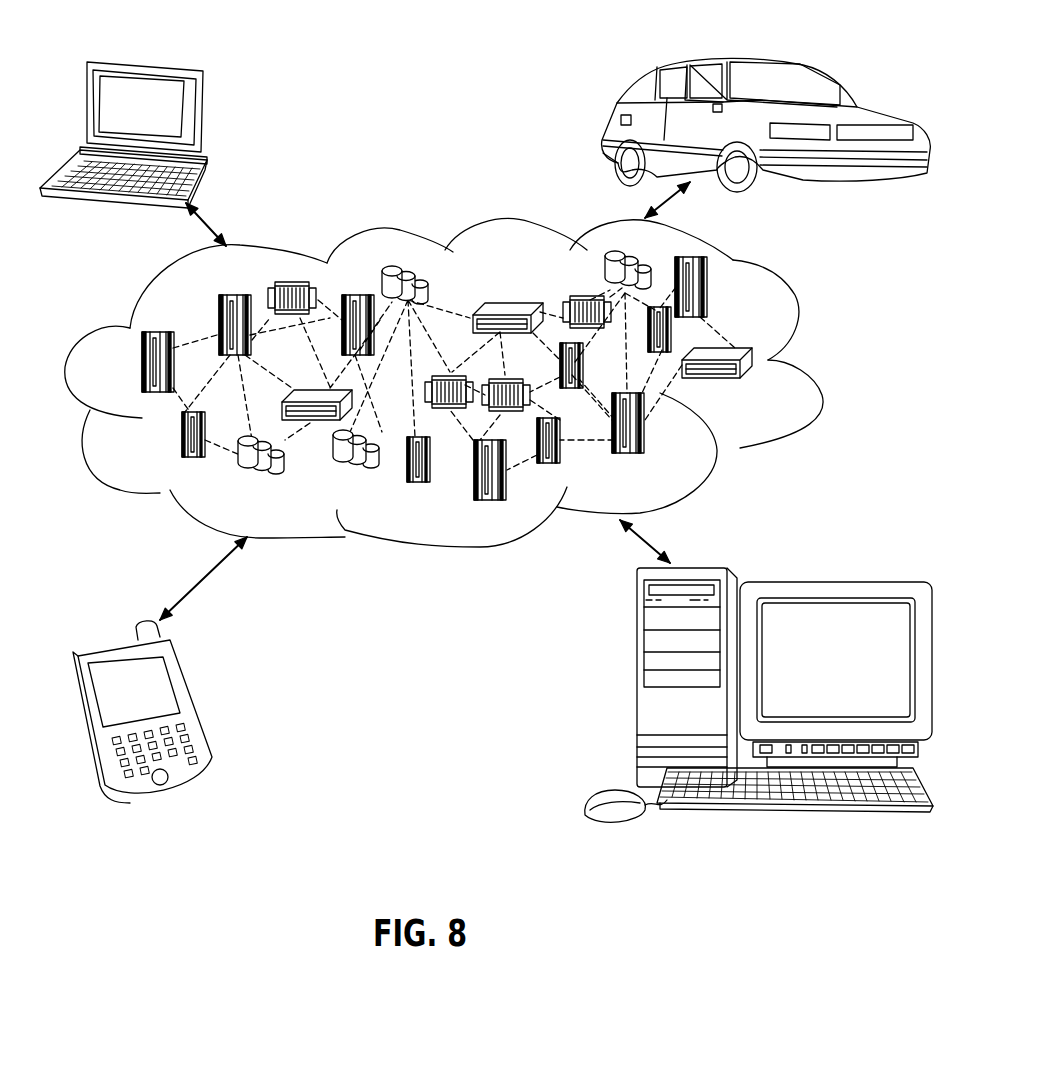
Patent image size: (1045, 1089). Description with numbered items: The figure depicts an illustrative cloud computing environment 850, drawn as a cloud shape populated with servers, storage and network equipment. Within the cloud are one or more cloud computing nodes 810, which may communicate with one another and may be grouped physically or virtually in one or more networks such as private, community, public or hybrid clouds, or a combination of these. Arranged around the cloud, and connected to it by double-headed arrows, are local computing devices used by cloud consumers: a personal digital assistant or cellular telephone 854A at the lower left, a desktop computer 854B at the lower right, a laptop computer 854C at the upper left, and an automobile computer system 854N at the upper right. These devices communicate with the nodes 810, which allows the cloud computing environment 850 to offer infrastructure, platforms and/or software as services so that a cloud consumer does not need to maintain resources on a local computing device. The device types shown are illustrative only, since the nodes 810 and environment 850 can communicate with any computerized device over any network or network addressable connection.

The cloud computing nodes 810 is at (783, 388).
The cloud computing environment 850 is at (798, 322).
The personal digital assistant or cellular telephone 854A is at (192, 705).
The desktop computer 854B is at (637, 683).
The laptop computer 854C is at (203, 115).
The automobile computer system 854N is at (610, 118).